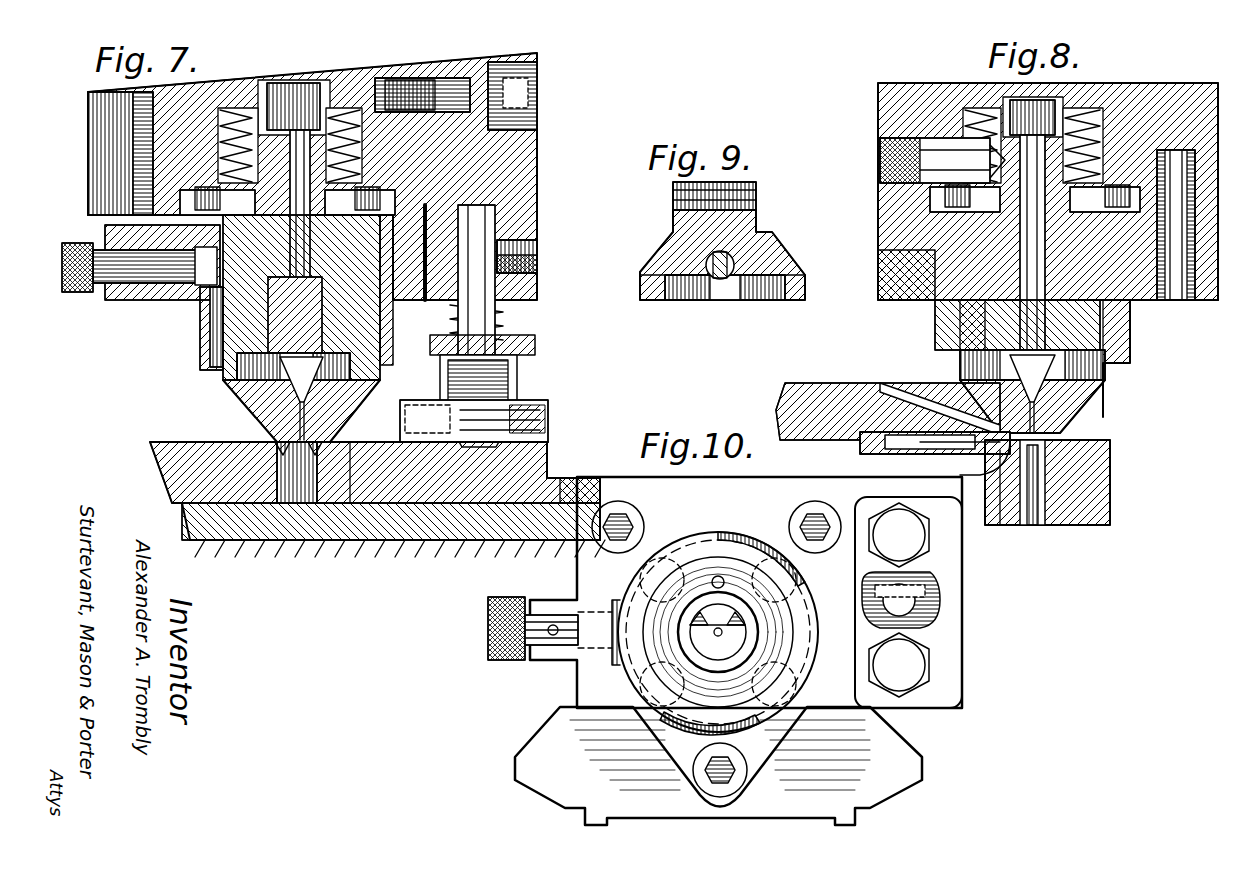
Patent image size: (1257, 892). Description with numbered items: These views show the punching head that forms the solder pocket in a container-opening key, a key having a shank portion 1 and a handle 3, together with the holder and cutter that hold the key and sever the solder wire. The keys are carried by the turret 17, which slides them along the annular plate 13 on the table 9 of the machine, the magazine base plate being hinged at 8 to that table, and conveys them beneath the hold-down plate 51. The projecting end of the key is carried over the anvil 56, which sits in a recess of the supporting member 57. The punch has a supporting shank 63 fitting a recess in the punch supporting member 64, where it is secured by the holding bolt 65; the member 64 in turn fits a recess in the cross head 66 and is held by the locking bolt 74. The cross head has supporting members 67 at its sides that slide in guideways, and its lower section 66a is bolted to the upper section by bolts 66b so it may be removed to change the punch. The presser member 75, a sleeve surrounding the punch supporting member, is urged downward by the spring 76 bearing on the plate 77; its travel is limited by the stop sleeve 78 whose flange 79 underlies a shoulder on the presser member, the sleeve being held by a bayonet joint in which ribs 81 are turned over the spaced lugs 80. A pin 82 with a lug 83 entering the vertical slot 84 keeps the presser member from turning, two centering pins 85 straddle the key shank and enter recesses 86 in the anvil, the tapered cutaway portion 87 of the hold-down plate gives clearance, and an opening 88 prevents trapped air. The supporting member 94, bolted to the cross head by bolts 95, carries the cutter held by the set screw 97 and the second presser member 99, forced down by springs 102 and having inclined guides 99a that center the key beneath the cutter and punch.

In FIG. 7, the shank portion 1 is at (520, 442).
In FIG. 8, the shank portion 1 is at (1050, 440).
In FIG. 8, the handle 3 is at (935, 456).
In FIG. 7, the hinge 8 is at (278, 72).
In FIG. 7, the table 9 is at (188, 165).
In FIG. 8, the annular plate 13 is at (885, 452).
In FIG. 8, the turret 17 is at (862, 440).
In FIG. 7, the hold-down plate 51 is at (405, 405).
In FIG. 8, the hold-down plate 51 is at (795, 400).
In FIG. 7, the anvil 56 is at (168, 478).
In FIG. 7, the supporting member 57 is at (549, 468).
In FIG. 8, the supporting member 57 is at (1110, 483).
In FIG. 7, the supporting shank 63 is at (270, 300).
In FIG. 8, the supporting shank 63 is at (1003, 313).
In FIG. 7, the punch supporting member 64 is at (248, 340).
In FIG. 8, the punch supporting member 64 is at (935, 295).
In FIG. 7, the holding bolt 65 is at (300, 95).
In FIG. 8, the holding bolt 65 is at (1030, 118).
In FIG. 10, the cross head 66 is at (790, 765).
In FIG. 8, the lower section of cross head 66a is at (900, 268).
In FIG. 8, the bolts 66b is at (1185, 285).
In FIG. 10, the supporting members 67 is at (535, 762).
In FIG. 8, the locking bolt 74 is at (900, 150).
In FIG. 7, the presser member 75 is at (378, 330).
In FIG. 8, the presser member 75 is at (940, 247).
In FIG. 7, the spring 76 is at (418, 192).
In FIG. 8, the spring 76 is at (1090, 185).
In FIG. 7, the plate 77 is at (385, 222).
In FIG. 9, the plate 77 is at (758, 212).
In FIG. 8, the plate 77 is at (1120, 220).
In FIG. 7, the stop sleeve 78 is at (394, 320).
In FIG. 8, the stop sleeve 78 is at (1135, 338).
In FIG. 7, the flange 79 is at (205, 358).
In FIG. 8, the flange 79 is at (1112, 362).
In FIG. 10, the flange 79 is at (790, 640).
In FIG. 10, the lugs 80 is at (800, 605).
In FIG. 10, the ribs 81 is at (795, 578).
In FIG. 7, the pin 82 is at (80, 248).
In FIG. 9, the pin 82 is at (735, 262).
In FIG. 10, the pin 82 is at (488, 628).
In FIG. 7, the lug 83 is at (198, 268).
In FIG. 9, the lug 83 is at (680, 262).
In FIG. 10, the lug 83 is at (612, 640).
In FIG. 7, the vertical slot 84 is at (185, 305).
In FIG. 7, the centering pins 85 is at (283, 450).
In FIG. 10, the centering pins 85 is at (718, 632).
In FIG. 7, the recesses 86 is at (312, 450).
In FIG. 7, the tapered cutaway portion 87 is at (522, 415).
In FIG. 8, the tapered cutaway portion 87 is at (912, 382).
In FIG. 8, the opening 88 is at (1000, 500).
In FIG. 10, the opening 88 is at (720, 576).
In FIG. 7, the supporting member 94 is at (518, 140).
In FIG. 7, the bolts 95 is at (456, 94).
In FIG. 7, the set screw 97 is at (527, 250).
In FIG. 7, the presser member 99 is at (505, 370).
In FIG. 10, the presser member 99 is at (937, 612).
In FIG. 7, the guides 99a is at (470, 438).
In FIG. 10, the guides 99a is at (937, 582).
In FIG. 7, the springs 102 is at (493, 322).